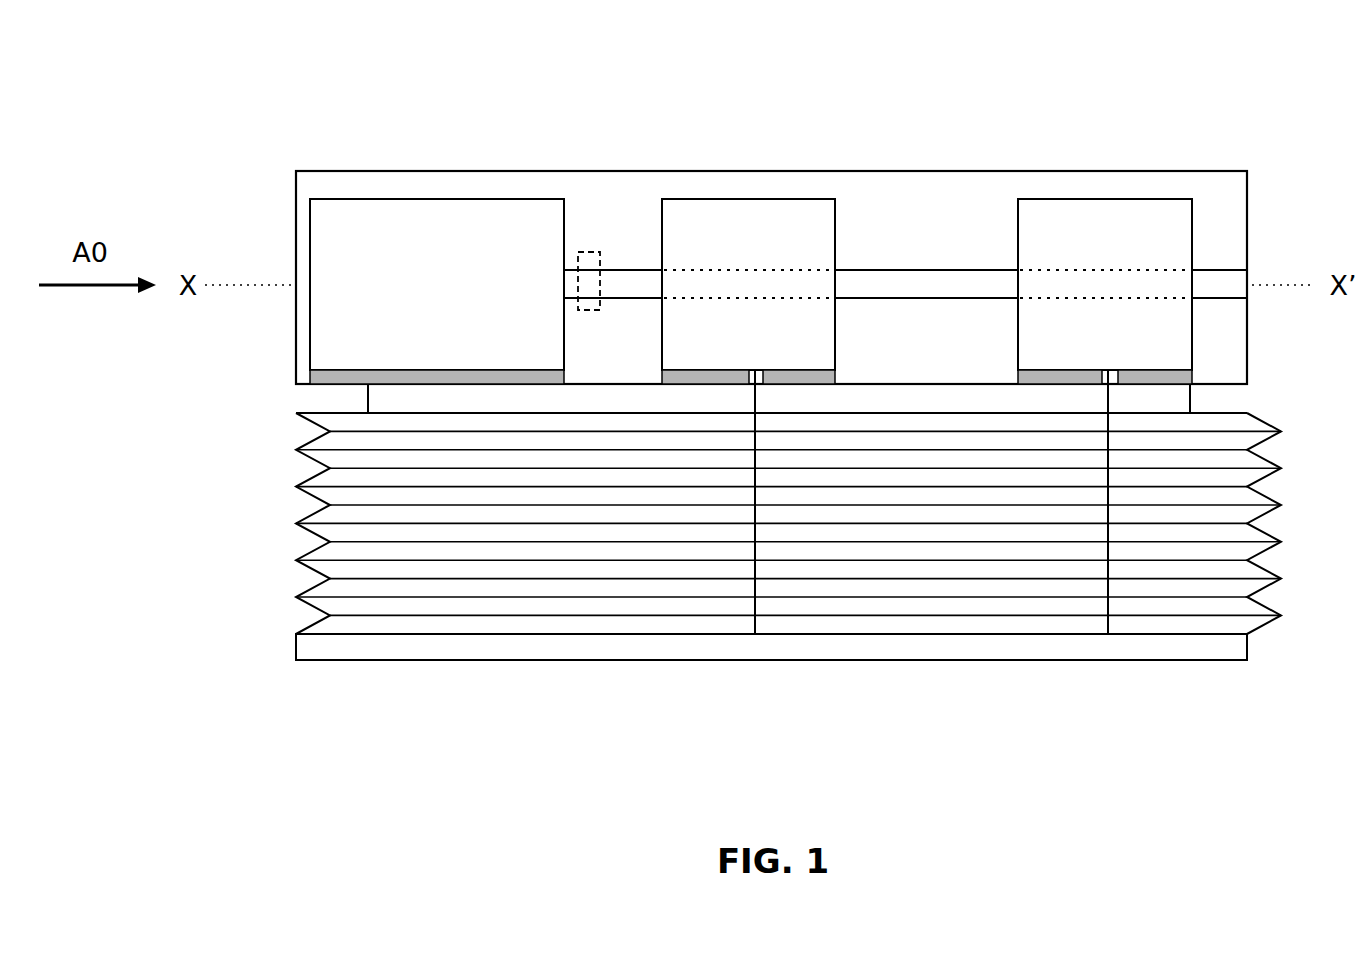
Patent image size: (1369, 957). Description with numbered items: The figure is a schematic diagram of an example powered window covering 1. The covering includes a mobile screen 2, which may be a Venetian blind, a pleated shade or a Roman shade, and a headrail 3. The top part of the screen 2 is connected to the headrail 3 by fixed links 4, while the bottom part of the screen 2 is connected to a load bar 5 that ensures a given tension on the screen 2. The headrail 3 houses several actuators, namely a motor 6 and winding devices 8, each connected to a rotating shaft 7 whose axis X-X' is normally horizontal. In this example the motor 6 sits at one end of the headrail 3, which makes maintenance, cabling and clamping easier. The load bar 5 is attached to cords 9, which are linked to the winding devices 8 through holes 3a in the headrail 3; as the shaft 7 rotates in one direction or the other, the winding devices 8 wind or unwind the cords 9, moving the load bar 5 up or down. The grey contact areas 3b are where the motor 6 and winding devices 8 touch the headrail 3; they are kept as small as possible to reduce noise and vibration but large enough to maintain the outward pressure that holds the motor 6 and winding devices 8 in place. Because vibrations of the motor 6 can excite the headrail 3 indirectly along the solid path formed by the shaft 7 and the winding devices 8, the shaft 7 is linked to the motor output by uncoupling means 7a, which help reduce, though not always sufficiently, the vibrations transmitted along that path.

The powered window covering 1 is at (150, 497).
The mobile screen 2 is at (322, 528).
The headrail 3 is at (338, 171).
The holes 3a is at (757, 357).
The contact areas 3b is at (837, 375).
The fixed links 4 is at (368, 396).
The load bar 5 is at (318, 650).
The motor 6 is at (446, 218).
The rotating shaft 7 is at (636, 283).
The uncoupling means 7a is at (596, 250).
The winding devices 8 is at (720, 218).
The cords 9 is at (753, 580).